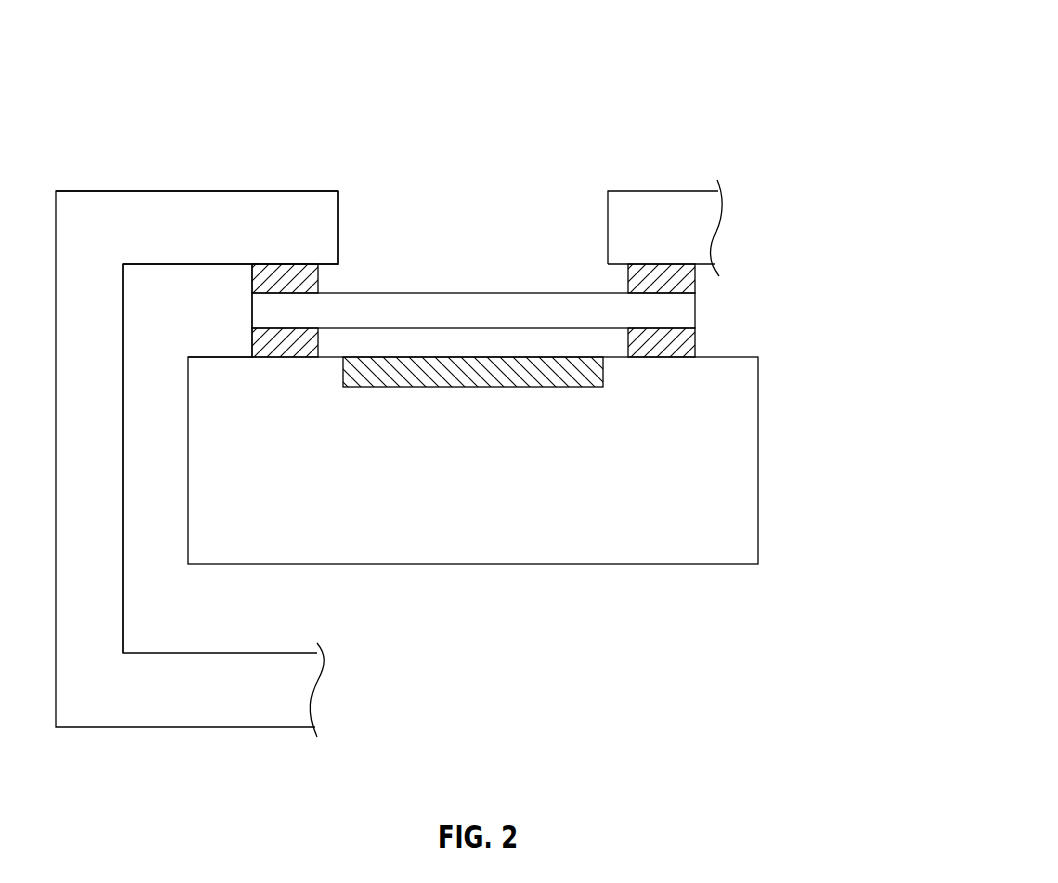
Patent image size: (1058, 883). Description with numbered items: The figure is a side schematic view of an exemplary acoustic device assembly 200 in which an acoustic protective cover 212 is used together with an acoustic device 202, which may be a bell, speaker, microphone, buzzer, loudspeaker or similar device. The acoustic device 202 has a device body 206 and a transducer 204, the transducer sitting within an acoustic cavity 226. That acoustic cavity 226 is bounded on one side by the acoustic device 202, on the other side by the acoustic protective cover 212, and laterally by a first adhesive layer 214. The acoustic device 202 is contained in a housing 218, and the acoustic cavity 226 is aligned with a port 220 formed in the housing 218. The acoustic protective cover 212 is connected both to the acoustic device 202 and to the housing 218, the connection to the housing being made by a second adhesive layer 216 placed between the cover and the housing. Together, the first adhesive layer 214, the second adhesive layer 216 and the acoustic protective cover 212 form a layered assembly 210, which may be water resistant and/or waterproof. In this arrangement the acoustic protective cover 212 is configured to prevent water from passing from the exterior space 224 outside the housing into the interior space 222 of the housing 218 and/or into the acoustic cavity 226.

The acoustic device assembly 200 is at (128, 52).
The acoustic device 202 is at (778, 476).
The transducer 204 is at (457, 388).
The device body 206 is at (673, 565).
The layered assembly 210 is at (838, 237).
The acoustic protective cover 212 is at (687, 312).
The first adhesive layer 214 is at (688, 346).
The second adhesive layer 216 is at (688, 285).
The housing 218 is at (198, 190).
The port 220 is at (452, 243).
The interior space 222 is at (206, 317).
The exterior space 224 is at (350, 152).
The acoustic cavity 226 is at (490, 340).